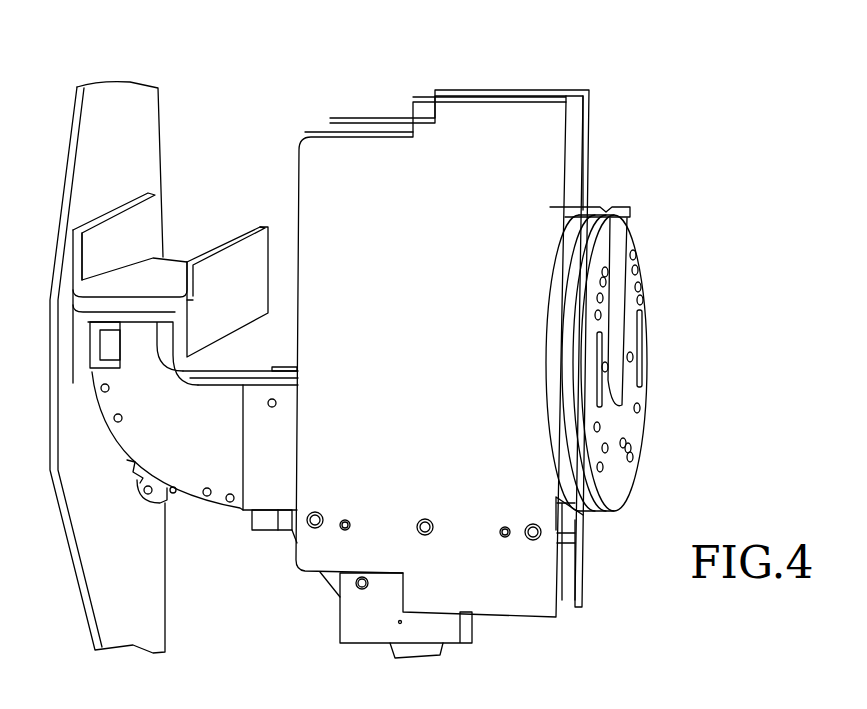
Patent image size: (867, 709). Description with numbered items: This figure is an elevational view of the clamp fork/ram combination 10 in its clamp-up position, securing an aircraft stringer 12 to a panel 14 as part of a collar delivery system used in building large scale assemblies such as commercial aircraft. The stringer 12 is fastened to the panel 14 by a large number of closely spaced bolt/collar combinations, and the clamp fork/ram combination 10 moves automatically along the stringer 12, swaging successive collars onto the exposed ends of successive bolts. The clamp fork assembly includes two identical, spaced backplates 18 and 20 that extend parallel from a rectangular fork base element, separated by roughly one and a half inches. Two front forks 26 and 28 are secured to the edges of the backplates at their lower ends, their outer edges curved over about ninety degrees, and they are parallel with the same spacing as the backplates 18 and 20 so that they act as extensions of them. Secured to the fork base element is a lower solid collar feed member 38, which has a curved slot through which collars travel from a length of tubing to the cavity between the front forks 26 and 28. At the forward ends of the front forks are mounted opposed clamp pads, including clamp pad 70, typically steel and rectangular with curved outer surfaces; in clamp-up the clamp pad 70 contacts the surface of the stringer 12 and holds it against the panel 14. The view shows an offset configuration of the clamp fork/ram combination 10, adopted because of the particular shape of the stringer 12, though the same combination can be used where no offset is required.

The clamp fork/ram combination 10 is at (375, 349).
The aircraft stringer 12 is at (248, 243).
The panel 14 is at (153, 133).
The backplate 18 is at (550, 167).
The backplate 20 is at (568, 92).
The front fork 26 is at (218, 477).
The front fork 28 is at (245, 373).
The lower solid collar feed member 38 is at (453, 630).
The clamp pad 70 is at (95, 340).